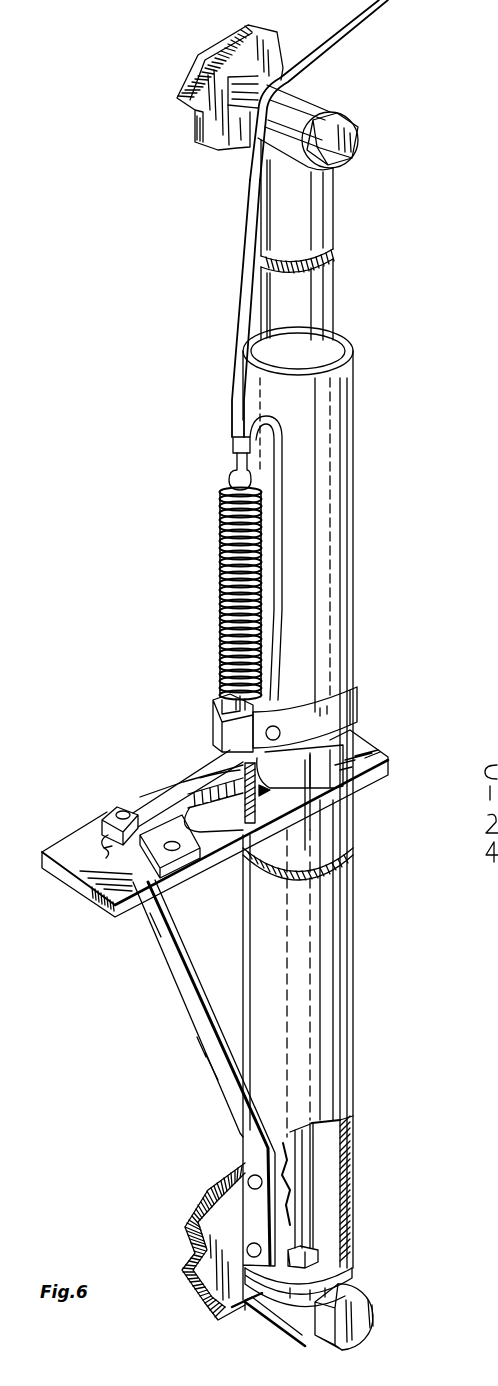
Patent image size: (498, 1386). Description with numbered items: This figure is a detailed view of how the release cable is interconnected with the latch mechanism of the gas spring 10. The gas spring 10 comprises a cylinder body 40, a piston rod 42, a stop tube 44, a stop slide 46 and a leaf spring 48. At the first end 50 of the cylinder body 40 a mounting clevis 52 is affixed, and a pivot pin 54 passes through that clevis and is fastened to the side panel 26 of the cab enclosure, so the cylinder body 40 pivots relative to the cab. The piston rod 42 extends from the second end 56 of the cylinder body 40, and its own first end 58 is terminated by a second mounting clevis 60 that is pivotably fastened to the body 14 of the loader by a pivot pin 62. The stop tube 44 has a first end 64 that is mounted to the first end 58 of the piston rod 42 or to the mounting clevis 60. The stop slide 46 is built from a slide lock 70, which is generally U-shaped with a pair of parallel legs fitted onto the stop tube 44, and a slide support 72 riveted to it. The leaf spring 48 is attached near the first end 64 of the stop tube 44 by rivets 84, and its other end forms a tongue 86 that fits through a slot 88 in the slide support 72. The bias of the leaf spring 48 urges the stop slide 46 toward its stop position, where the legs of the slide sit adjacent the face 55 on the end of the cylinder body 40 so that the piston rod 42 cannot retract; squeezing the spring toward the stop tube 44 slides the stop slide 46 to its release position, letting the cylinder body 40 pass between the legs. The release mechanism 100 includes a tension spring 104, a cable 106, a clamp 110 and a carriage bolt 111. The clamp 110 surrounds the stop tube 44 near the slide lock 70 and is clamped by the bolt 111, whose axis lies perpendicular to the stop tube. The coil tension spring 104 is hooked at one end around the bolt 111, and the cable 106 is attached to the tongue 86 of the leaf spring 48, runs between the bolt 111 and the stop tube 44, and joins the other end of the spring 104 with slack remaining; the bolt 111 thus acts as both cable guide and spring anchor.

The gas spring 10 is at (337, 288).
The body 14 is at (205, 1190).
The side panel 26 is at (250, 54).
The cylinder body 40 is at (307, 313).
The piston rod 42 is at (310, 1162).
The stop tube 44 is at (340, 475).
The stop slide 46 is at (72, 894).
The leaf spring 48 is at (192, 1010).
The first end 50 is at (313, 201).
The mounting clevis 52 is at (303, 102).
The pivot pin 54 is at (298, 84).
The face 55 is at (225, 785).
The second end 56 is at (310, 765).
The first end 58 is at (320, 1244).
The mounting clevis 60 is at (292, 1326).
The pivot pin 62 is at (370, 1330).
The first end 64 is at (335, 1282).
The slide lock 70 is at (367, 745).
The slide support 72 is at (120, 806).
The rivets 84 is at (250, 1172).
The tongue 86 is at (100, 820).
The slot 88 is at (160, 875).
The release mechanism 100 is at (190, 556).
The tension spring 104 is at (235, 567).
The cable 106 is at (233, 408).
The clamp 110 is at (353, 683).
The carriage bolt 111 is at (275, 726).